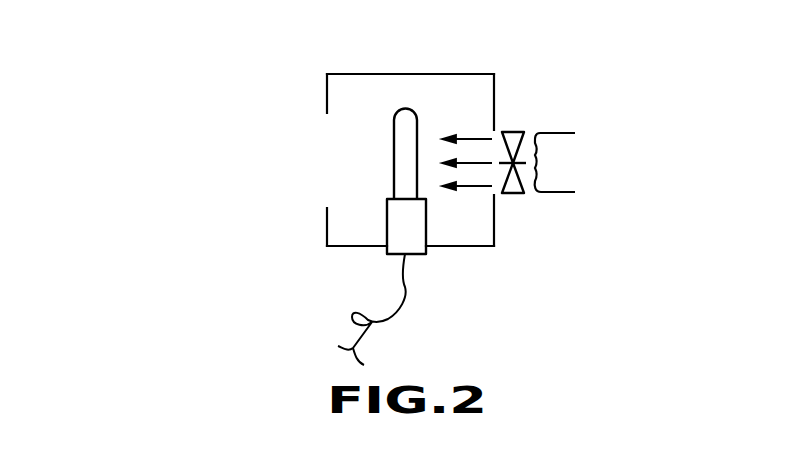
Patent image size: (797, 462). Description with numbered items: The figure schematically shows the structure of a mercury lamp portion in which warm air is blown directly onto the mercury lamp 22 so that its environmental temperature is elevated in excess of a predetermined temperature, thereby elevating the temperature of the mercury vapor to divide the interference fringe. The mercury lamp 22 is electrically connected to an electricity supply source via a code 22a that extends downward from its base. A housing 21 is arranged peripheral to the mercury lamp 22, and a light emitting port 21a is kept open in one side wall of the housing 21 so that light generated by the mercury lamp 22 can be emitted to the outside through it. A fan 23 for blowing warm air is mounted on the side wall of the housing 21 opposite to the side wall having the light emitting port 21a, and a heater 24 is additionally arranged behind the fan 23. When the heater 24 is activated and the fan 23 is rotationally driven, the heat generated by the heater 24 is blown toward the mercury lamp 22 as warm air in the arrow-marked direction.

The housing 21 is at (447, 74).
The light emitting port 21a is at (327, 157).
The mercury lamp 22 is at (403, 107).
The code 22a is at (407, 288).
The fan 23 is at (513, 131).
The heater 24 is at (571, 130).